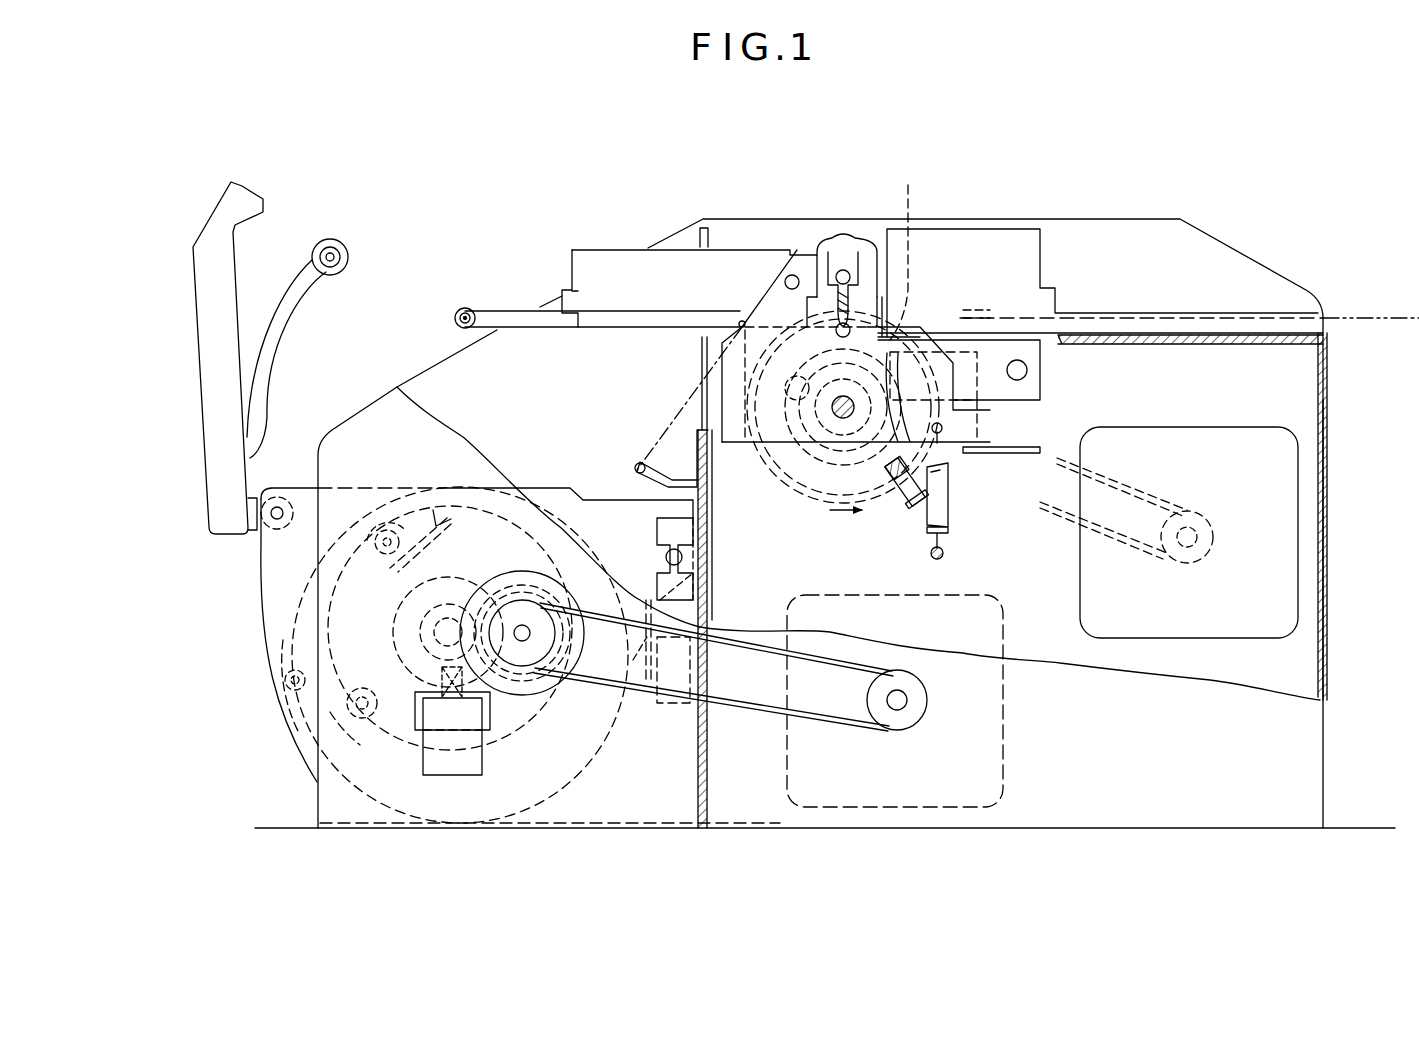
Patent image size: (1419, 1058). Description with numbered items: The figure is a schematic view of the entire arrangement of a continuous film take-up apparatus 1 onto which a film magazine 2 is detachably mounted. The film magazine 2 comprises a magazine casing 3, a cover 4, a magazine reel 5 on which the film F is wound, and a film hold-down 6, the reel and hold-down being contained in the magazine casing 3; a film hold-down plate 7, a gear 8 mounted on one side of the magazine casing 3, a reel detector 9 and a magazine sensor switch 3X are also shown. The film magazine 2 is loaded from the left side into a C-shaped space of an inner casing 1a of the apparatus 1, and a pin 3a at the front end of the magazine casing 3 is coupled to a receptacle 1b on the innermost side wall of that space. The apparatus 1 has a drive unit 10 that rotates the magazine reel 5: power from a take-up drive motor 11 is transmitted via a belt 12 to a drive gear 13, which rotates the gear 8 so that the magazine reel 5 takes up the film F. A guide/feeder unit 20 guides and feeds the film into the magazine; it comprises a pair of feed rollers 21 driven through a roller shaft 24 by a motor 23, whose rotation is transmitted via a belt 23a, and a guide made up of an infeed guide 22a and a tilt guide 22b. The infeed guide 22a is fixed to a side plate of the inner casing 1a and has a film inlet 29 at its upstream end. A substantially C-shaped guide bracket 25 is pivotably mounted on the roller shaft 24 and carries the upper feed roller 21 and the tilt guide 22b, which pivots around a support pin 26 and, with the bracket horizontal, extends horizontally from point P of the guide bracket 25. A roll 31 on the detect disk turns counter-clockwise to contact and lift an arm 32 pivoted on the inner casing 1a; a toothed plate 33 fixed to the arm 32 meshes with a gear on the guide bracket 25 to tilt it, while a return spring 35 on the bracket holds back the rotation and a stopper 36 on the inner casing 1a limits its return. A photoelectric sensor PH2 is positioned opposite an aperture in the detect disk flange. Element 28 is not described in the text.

The continuous film take-up apparatus 1 is at (543, 250).
The inner casing 1a is at (1328, 538).
The receptacle 1b is at (697, 588).
The film magazine 2 is at (190, 500).
The magazine casing 3 is at (270, 596).
The pin 3a is at (682, 556).
The magazine sensor switch 3X is at (671, 708).
The cover 4 is at (206, 360).
The magazine reel 5 is at (330, 700).
The film hold-down 6 is at (290, 298).
The film hold-down plate 7 is at (437, 500).
The gear 8 is at (457, 612).
The reel detector 9 is at (410, 695).
The drive unit 10 is at (826, 593).
The take-up drive motor 11 is at (877, 782).
The belt 12 is at (754, 706).
The drive gear 13 is at (540, 592).
The guide/feeder unit 20 is at (633, 246).
The feed rollers 21 is at (858, 237).
The infeed guide 22a is at (988, 229).
The tilt guide 22b is at (771, 253).
The motor 23 is at (1240, 450).
The belt 23a is at (1148, 492).
The roller shaft 24 is at (843, 420).
The guide bracket 25 is at (755, 297).
The support pin 26 is at (796, 275).
The paper guide roller 28 is at (460, 310).
The film inlet 29 is at (1062, 302).
The roll 31 is at (788, 400).
The arm 32 is at (1030, 368).
The toothed plate 33 is at (980, 392).
The return spring 35 is at (955, 537).
The stopper 36 is at (990, 452).
The point P is at (672, 330).
The photoelectric sensor PH2 is at (912, 505).
The film F is at (1378, 318).